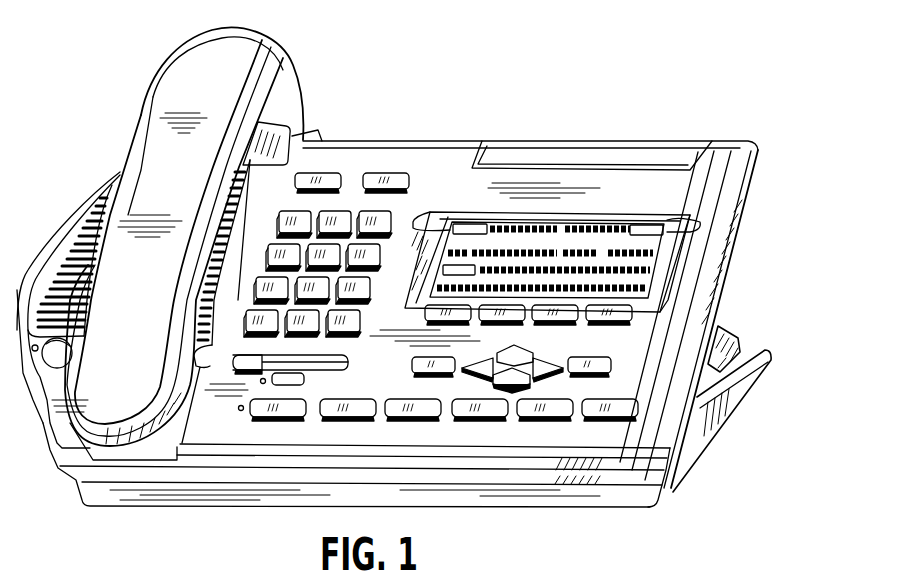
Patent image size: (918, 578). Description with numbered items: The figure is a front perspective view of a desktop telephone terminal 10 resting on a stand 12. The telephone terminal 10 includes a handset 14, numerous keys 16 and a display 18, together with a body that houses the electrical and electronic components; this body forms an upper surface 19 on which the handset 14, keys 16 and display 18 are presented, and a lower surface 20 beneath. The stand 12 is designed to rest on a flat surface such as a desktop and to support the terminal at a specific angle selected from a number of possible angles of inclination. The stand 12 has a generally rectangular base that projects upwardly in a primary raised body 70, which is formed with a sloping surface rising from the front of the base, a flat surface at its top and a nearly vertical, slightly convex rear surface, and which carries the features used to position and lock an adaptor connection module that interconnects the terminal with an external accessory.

The telephone terminal 10 is at (492, 129).
The stand 12 is at (733, 400).
The handset 14 is at (180, 73).
The keys 16 is at (373, 213).
The display 18 is at (527, 246).
The upper surface 19 is at (718, 162).
The lower surface 20 is at (770, 192).
The primary raised body 70 is at (735, 338).